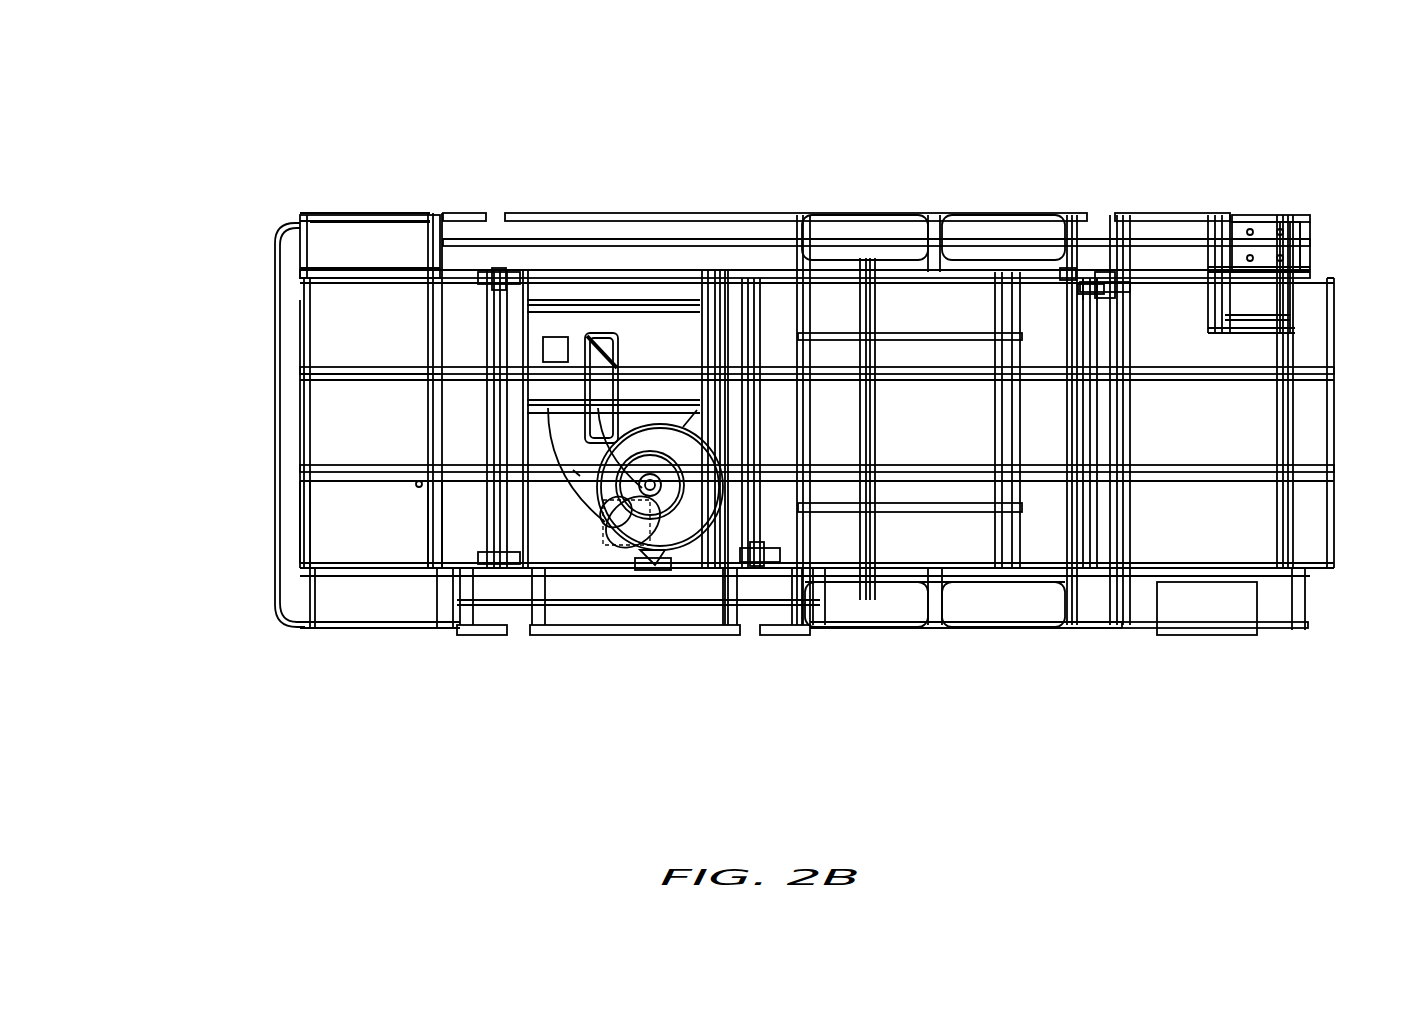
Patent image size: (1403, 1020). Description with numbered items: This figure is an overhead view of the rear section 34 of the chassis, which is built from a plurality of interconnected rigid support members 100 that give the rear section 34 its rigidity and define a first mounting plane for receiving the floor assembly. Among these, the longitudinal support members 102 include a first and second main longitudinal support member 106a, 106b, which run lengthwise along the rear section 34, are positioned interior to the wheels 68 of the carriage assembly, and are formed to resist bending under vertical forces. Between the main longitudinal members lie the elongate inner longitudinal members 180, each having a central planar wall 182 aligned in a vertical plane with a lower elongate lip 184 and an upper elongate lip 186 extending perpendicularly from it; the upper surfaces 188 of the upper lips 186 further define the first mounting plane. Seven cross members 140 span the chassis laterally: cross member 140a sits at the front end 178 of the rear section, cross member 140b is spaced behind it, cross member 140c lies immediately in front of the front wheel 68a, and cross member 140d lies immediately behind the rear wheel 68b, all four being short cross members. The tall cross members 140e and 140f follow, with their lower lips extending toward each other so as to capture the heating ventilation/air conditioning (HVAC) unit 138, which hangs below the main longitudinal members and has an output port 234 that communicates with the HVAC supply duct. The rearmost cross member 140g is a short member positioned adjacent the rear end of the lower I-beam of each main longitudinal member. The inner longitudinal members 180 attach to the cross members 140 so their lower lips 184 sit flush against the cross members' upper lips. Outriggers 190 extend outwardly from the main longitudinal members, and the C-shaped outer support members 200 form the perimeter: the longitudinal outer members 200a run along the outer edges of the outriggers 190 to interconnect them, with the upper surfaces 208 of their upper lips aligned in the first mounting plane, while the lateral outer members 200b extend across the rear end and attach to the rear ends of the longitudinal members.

The longitudinal support members 102 is at (332, 135).
The rear section 34 is at (633, 165).
The rigid support members 100 is at (890, 135).
The first main longitudinal support member 106a is at (342, 273).
The second main longitudinal support member 106b is at (303, 628).
The upper surfaces 208 is at (347, 214).
The cross member 140 is at (433, 318).
The cross member 140f is at (503, 278).
The heating ventilation/air conditioning (HVAC) unit 138 is at (603, 322).
The cross member 140e is at (718, 282).
The cross member 140d is at (787, 270).
The outer support members 200 is at (868, 214).
The cross member 140c is at (1065, 278).
The cross member 140b is at (1123, 333).
The cross member 140a is at (1332, 313).
The front end 178 is at (1335, 520).
The central planar wall 182 is at (357, 372).
The lower elongate lip 184 is at (403, 367).
The upper elongate lip 186 is at (360, 382).
The upper surfaces 188 is at (420, 368).
The inner longitudinal members 180 is at (328, 369).
The lateral outer members 200b is at (303, 532).
The cross member 140g is at (437, 512).
The outriggers 190 is at (530, 613).
The output port 234 is at (634, 533).
The rear wheel 68b is at (848, 607).
The front wheel 68a is at (1052, 607).
The wheels 68 is at (1012, 607).
The longitudinal outer members 200a is at (993, 625).